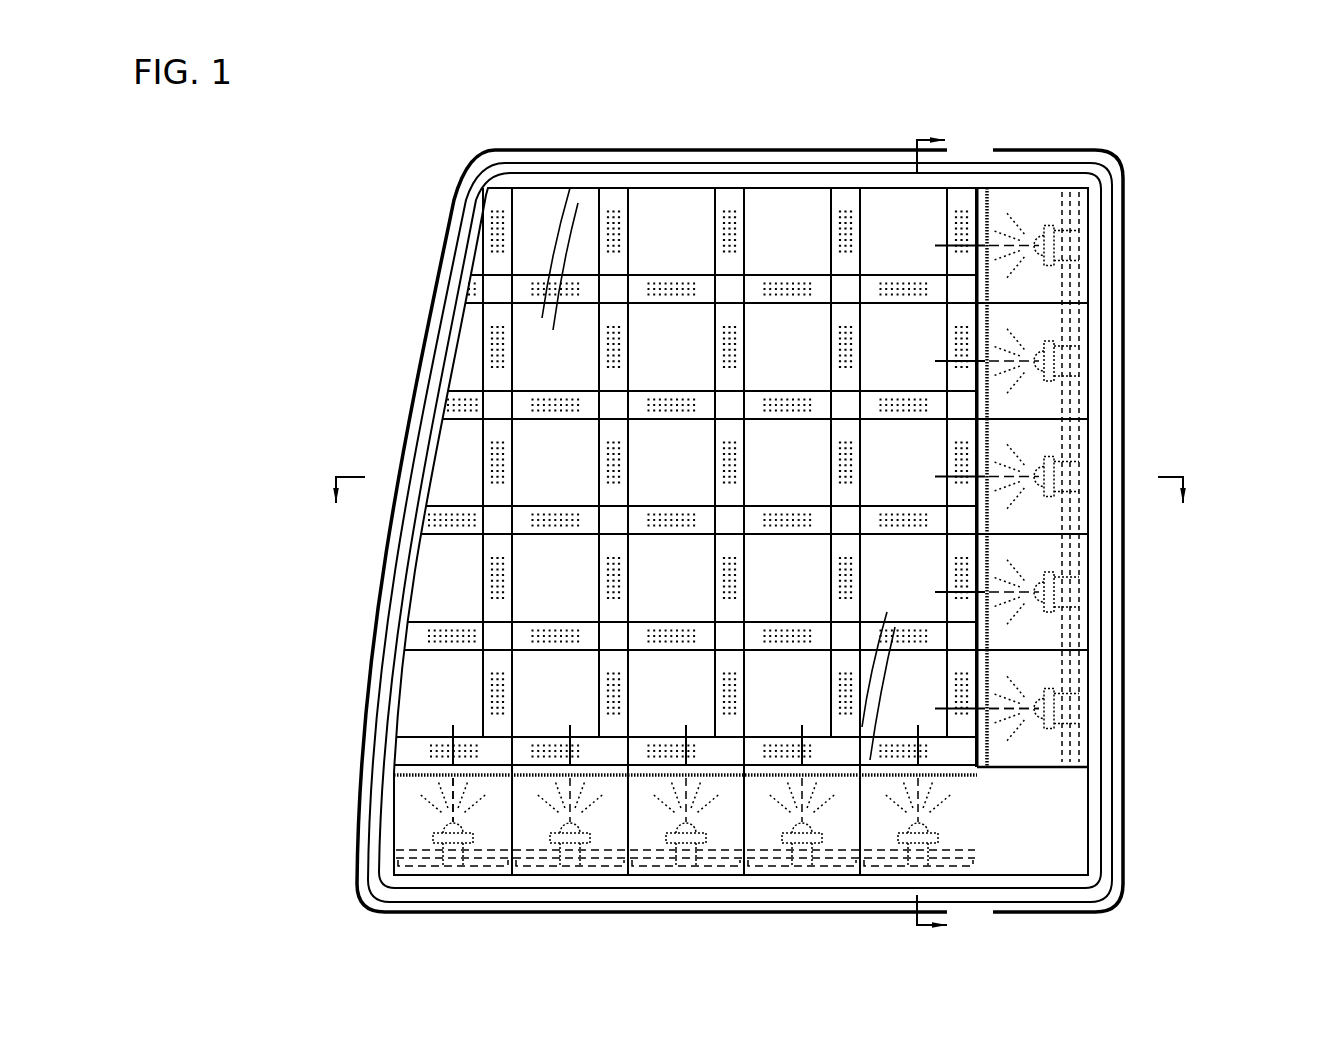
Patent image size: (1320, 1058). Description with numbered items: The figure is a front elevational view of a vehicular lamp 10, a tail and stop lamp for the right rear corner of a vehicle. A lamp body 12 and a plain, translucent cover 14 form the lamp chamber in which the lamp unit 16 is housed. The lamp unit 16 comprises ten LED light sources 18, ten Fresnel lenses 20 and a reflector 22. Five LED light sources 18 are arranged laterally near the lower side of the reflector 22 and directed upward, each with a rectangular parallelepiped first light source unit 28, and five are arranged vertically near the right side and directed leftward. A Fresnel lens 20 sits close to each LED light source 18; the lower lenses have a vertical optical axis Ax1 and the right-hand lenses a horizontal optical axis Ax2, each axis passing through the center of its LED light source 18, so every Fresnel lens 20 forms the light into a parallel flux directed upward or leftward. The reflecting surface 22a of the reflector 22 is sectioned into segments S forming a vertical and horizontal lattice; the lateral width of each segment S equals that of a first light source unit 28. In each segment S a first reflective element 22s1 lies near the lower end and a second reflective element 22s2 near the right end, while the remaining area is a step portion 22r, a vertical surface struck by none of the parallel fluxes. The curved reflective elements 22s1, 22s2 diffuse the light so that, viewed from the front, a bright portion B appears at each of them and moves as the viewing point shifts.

The vehicular lamp 10 is at (372, 248).
The lamp body 12 is at (1130, 307).
The translucent cover 14 is at (740, 532).
The lamp unit 16 is at (1100, 445).
The LED light source 18 is at (447, 823).
The Fresnel lens 20 is at (415, 765).
The reflector 22 is at (405, 665).
The reflecting surface 22a is at (550, 358).
The step portion 22r is at (660, 455).
The first reflective element 22s1 is at (645, 520).
The second reflective element 22s2 is at (727, 437).
The first light source unit 28 is at (745, 805).
The bright portion B is at (580, 520).
The segment S is at (452, 645).
The optical axis Ax1 is at (455, 800).
The optical axis Ax2 is at (1000, 705).